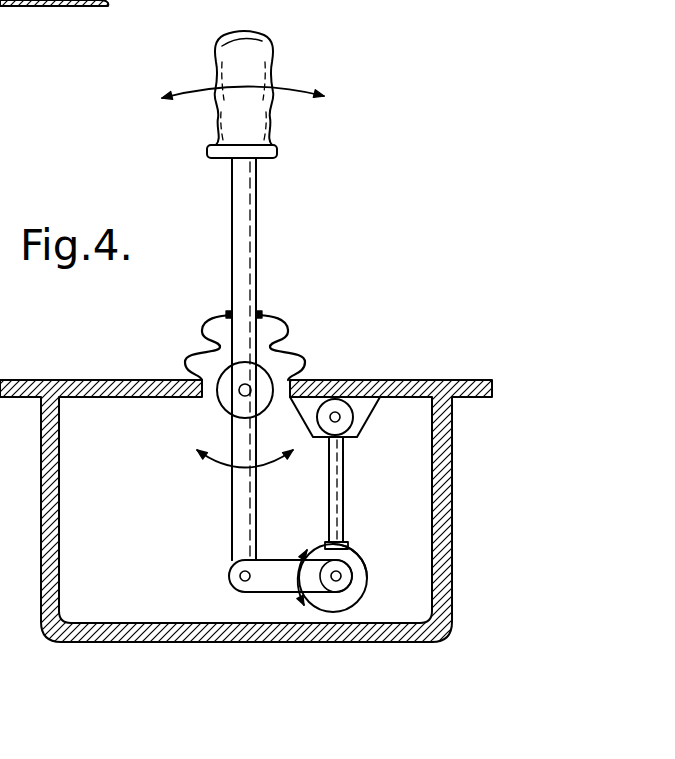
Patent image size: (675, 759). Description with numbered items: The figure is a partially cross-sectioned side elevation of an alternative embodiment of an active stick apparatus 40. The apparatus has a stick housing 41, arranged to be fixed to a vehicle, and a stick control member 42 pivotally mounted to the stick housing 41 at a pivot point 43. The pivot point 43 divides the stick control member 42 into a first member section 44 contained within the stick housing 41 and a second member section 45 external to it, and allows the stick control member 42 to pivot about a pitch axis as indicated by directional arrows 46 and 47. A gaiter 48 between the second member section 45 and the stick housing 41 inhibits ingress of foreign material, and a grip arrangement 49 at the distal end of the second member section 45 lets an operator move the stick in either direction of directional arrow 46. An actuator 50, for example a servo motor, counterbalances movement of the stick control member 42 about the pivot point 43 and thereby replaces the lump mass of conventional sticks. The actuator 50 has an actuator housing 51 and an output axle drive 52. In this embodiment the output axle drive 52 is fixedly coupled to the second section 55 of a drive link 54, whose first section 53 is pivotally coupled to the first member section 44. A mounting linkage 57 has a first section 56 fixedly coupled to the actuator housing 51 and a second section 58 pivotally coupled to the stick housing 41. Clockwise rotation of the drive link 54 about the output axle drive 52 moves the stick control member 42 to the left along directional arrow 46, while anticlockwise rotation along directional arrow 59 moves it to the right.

The active stick apparatus 40 is at (387, 172).
The stick housing 41 is at (441, 422).
The stick control member 42 is at (259, 262).
The pivot point 43 is at (248, 389).
The first member section 44 is at (233, 433).
The second member section 45 is at (238, 181).
The directional arrow 46 is at (297, 88).
The directional arrow 47 is at (213, 463).
The gaiter 48 is at (187, 357).
The grip arrangement 49 is at (260, 43).
The actuator 50 is at (353, 590).
The actuator housing 51 is at (368, 576).
The output axle drive 52 is at (347, 558).
The first section of the drive link 53 is at (233, 573).
The drive link 54 is at (267, 580).
The second section of the drive link 55 is at (325, 563).
The first section of the mounting linkage 56 is at (339, 572).
The mounting linkage 57 is at (340, 468).
The second section of the mounting linkage 58 is at (337, 413).
The directional arrow 59 is at (250, 547).